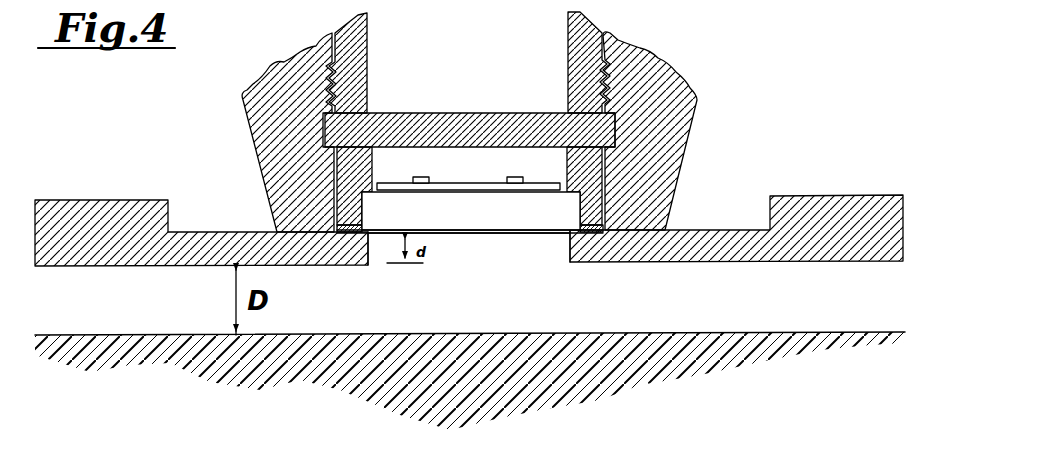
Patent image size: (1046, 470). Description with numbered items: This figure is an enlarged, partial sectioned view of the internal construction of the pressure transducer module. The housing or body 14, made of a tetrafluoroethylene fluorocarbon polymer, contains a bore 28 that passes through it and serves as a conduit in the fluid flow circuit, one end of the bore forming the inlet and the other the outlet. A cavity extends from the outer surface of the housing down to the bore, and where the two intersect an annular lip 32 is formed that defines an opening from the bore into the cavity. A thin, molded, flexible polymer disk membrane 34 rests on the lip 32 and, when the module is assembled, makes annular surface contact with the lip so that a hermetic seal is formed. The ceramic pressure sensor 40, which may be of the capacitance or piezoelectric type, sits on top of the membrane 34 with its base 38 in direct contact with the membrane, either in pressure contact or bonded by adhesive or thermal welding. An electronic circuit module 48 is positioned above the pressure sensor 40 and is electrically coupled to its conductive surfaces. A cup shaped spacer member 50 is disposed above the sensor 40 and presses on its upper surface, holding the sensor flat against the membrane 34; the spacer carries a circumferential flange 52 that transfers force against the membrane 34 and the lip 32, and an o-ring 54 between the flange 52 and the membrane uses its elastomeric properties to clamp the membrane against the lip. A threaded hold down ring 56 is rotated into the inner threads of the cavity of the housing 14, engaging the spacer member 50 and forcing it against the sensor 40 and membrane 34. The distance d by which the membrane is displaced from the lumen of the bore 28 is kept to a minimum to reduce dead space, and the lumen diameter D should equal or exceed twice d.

The housing 14 is at (697, 104).
The bore 28 is at (52, 267).
The annular lip 32 is at (370, 237).
The flexible polymer disk membrane 34 is at (440, 235).
The base of the pressure sensor 38 is at (495, 235).
The pressure sensor 40 is at (553, 216).
The electronic circuit module 48 is at (501, 177).
The cup shaped spacer member 50 is at (522, 90).
The circumferential flange 52 is at (585, 218).
The o-ring 54 is at (605, 232).
The threaded hold down ring 56 is at (367, 35).